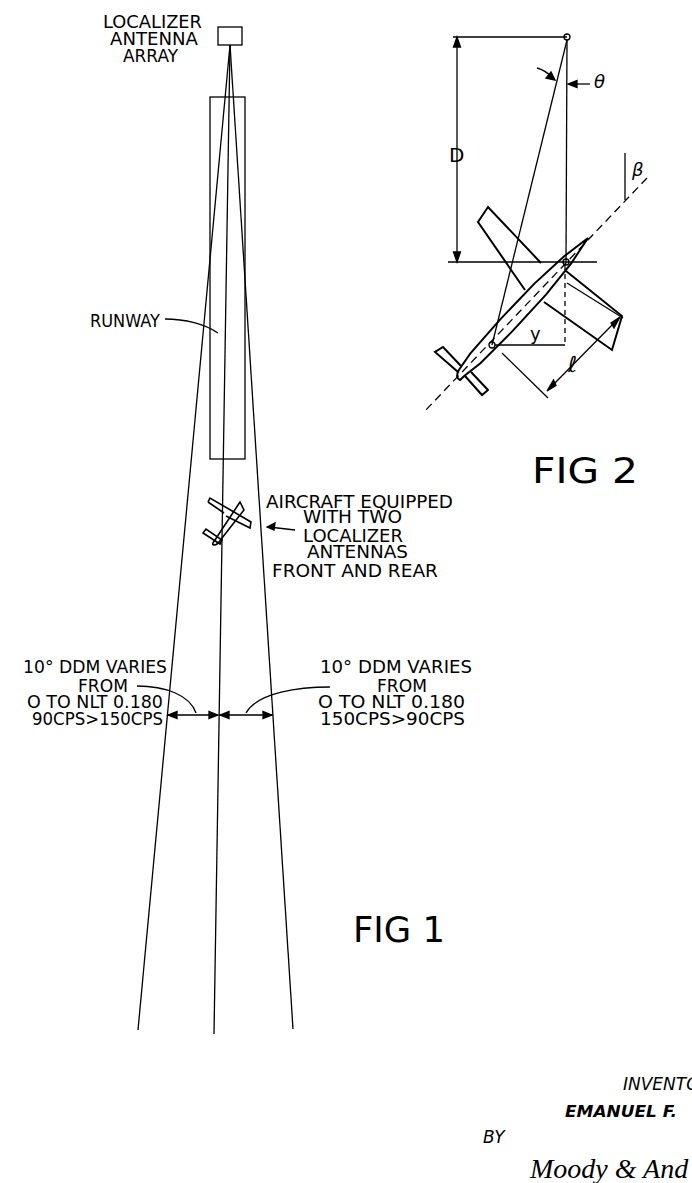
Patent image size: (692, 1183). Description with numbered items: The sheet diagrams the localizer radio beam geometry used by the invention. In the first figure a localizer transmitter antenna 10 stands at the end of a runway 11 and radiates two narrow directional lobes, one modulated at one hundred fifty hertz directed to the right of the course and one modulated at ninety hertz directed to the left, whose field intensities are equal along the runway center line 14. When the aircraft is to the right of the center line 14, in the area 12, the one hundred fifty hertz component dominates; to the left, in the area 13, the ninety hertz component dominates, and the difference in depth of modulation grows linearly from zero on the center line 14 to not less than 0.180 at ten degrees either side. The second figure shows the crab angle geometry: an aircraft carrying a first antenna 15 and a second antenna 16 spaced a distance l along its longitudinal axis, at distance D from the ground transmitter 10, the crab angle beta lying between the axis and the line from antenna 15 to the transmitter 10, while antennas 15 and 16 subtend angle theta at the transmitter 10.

In FIG. 1, the localizer transmitter antenna 10 is at (243, 36).
In FIG. 2, the localizer transmitter antenna 10 is at (571, 36).
In FIG. 1, the runway 11 is at (246, 134).
In FIG. 1, the area to the right of the center line 12 is at (268, 620).
In FIG. 1, the area to the left of the center line 13 is at (177, 613).
In FIG. 1, the center line 14 is at (220, 590).
In FIG. 2, the first antenna 15 is at (594, 262).
In FIG. 2, the second antenna 16 is at (489, 342).